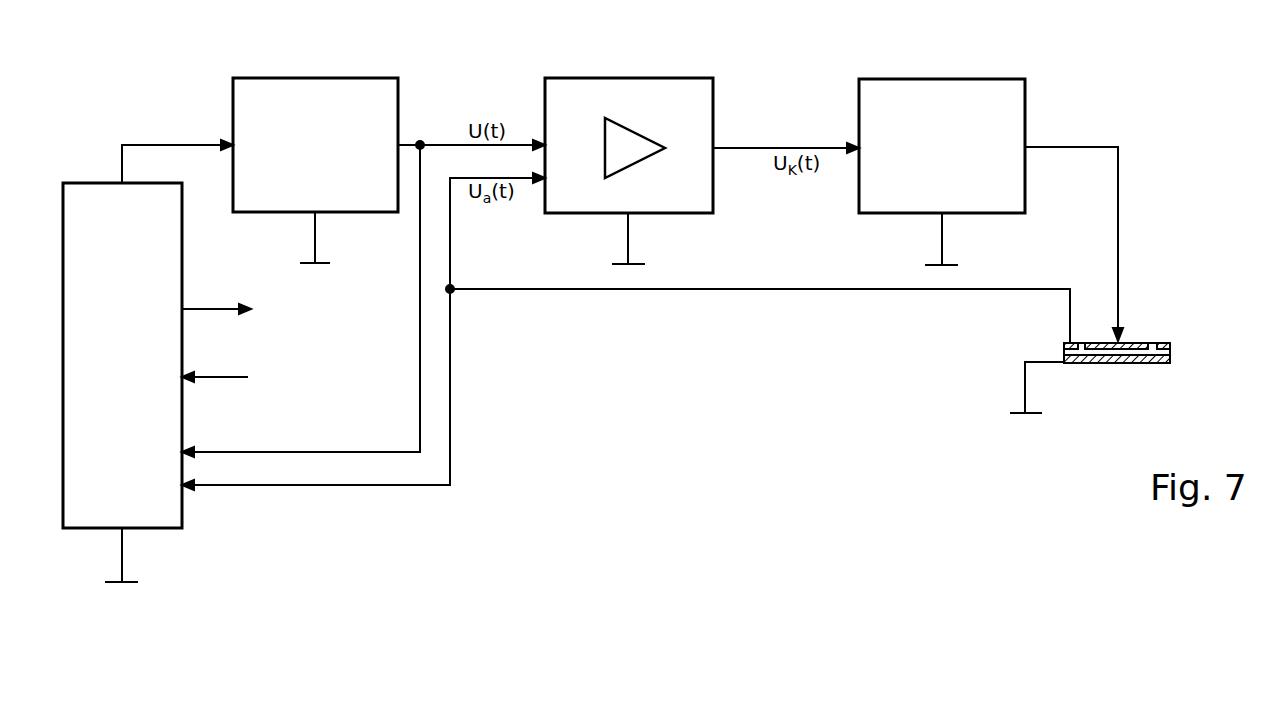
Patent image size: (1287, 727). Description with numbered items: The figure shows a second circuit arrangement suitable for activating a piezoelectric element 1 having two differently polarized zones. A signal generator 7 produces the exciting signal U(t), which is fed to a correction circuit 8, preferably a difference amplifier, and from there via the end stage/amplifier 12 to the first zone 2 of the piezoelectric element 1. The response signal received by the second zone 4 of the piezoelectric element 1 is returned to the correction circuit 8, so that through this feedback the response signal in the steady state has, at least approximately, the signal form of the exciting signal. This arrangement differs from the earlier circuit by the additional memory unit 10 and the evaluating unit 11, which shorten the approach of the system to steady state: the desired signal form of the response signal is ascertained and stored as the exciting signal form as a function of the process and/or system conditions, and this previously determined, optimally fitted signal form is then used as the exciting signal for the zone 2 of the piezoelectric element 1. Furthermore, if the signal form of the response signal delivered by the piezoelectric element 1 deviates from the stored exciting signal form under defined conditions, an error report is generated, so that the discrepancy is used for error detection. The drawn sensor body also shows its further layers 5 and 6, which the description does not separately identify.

The piezoelectric element 1 is at (1145, 352).
The first zone 2 is at (1100, 342).
The second zone 4 is at (1166, 341).
The sensitive layer 5 is at (1137, 333).
The substrate 6 is at (1090, 364).
The signal generator 7 is at (300, 93).
The correction circuit 8 is at (633, 92).
The memory unit 10 is at (230, 342).
The evaluating unit 11 is at (107, 200).
The end stage/amplifier 12 is at (962, 95).